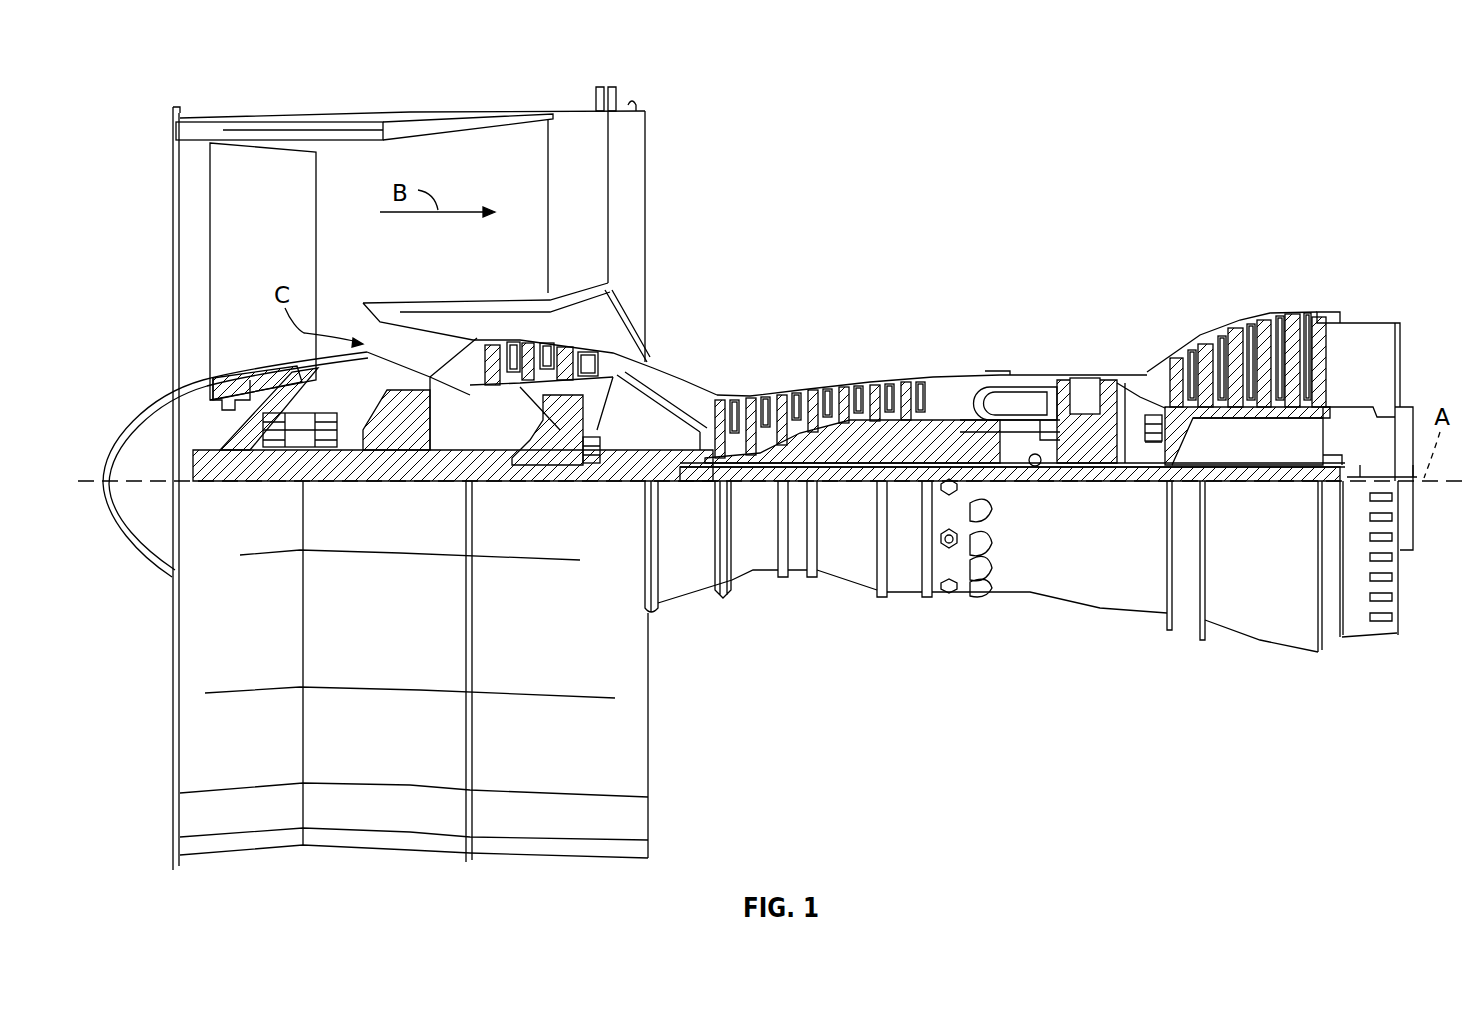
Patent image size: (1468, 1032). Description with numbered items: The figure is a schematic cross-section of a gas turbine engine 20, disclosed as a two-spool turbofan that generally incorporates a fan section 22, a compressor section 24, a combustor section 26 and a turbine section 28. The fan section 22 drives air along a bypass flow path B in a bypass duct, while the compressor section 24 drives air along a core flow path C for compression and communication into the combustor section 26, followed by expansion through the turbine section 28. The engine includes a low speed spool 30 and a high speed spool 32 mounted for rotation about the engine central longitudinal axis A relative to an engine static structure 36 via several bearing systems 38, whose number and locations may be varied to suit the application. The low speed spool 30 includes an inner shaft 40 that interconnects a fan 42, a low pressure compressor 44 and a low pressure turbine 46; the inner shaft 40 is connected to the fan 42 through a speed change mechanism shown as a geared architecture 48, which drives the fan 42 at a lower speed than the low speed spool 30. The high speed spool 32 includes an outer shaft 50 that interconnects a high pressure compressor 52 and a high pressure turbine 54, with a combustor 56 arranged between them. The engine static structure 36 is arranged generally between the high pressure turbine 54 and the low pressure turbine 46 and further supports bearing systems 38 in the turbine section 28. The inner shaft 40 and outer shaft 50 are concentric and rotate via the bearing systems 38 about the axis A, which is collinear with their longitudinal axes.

The gas turbine engine 20 is at (1219, 147).
The fan section 22 is at (281, 106).
The compressor section 24 is at (835, 338).
The combustor section 26 is at (1003, 337).
The turbine section 28 is at (1150, 320).
The low speed spool 30 is at (871, 482).
The high speed spool 32 is at (920, 430).
The engine static structure 36 is at (906, 596).
The bearing systems 38 is at (277, 447).
The inner shaft 40 is at (660, 478).
The fan 42 is at (287, 242).
The low pressure compressor 44 is at (560, 357).
The low pressure turbine 46 is at (1253, 338).
The geared architecture 48 is at (410, 450).
The outer shaft 50 is at (1035, 462).
The high pressure compressor 52 is at (825, 445).
The high pressure turbine 54 is at (1090, 374).
The combustor 56 is at (1012, 397).